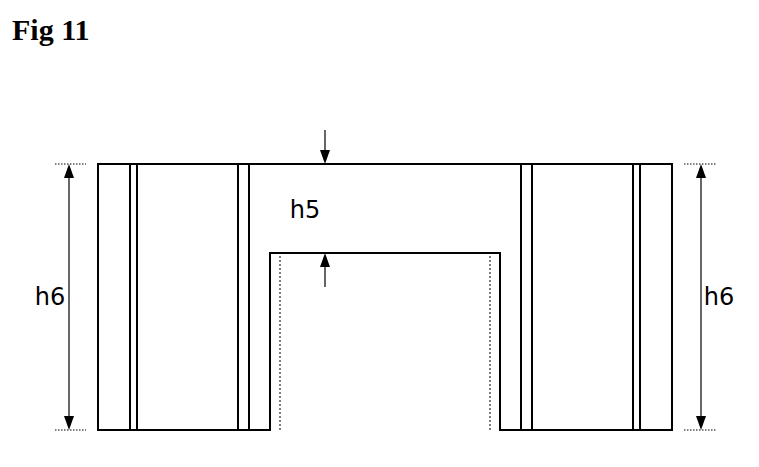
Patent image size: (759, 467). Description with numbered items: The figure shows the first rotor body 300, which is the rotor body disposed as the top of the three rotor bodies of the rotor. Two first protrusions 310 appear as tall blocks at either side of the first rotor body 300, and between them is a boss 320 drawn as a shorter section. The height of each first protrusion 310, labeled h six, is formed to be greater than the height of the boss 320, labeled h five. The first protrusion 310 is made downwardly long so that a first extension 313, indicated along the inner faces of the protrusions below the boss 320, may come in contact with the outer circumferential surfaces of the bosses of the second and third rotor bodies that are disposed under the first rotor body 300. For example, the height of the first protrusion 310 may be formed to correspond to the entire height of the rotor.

The first rotor body 300 is at (408, 163).
The first protrusion 310 is at (191, 163).
The first extension 313 is at (283, 349).
The boss 320 is at (393, 238).